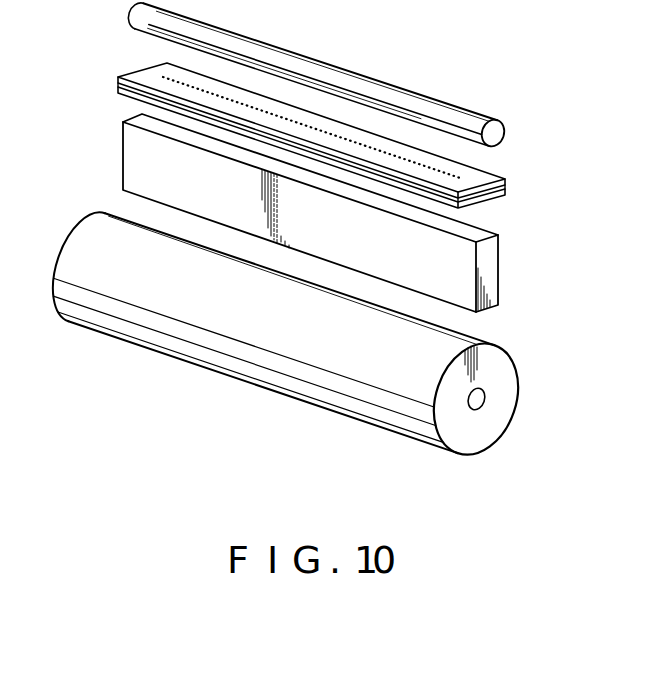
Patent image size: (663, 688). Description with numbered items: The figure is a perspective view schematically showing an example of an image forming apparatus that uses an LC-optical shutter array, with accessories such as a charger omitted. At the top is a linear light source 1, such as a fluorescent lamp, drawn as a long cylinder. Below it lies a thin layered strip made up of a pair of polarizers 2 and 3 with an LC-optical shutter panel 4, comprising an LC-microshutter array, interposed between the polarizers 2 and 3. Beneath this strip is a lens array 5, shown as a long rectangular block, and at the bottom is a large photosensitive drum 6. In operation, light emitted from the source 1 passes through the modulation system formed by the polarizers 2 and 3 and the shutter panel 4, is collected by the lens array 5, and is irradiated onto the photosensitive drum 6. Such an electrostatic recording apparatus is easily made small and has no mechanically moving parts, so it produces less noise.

The linear light source 1 is at (503, 122).
The polarizer 2 is at (492, 174).
The LC-optical shutter panel 4 is at (505, 188).
The polarizer 3 is at (503, 200).
The lens array 5 is at (500, 282).
The photosensitive drum 6 is at (518, 388).